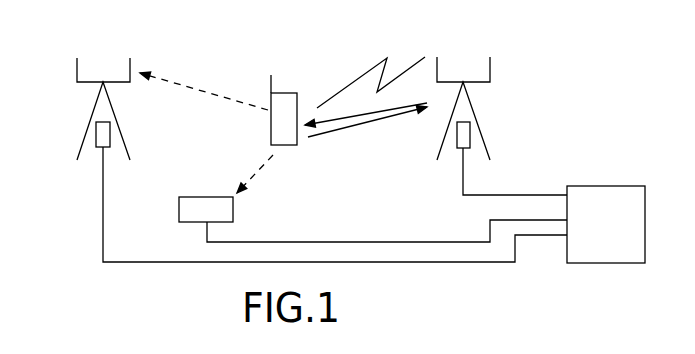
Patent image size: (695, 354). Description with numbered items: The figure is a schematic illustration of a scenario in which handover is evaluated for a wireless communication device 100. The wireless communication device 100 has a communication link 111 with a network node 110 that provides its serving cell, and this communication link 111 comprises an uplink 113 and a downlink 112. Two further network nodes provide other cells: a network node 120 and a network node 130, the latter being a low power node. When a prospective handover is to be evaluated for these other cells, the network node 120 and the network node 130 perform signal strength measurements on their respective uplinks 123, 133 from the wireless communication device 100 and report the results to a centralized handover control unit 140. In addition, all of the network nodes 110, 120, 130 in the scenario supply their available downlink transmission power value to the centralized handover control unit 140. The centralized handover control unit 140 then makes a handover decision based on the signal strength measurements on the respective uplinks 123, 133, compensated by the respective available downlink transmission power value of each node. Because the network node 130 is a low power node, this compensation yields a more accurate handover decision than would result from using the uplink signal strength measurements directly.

The wireless communication device 100 is at (297, 108).
The network node 110 is at (470, 130).
The communication link 111 is at (364, 100).
The downlink 112 is at (364, 105).
The uplink 113 is at (386, 113).
The network node 120 is at (96, 125).
The uplink 123 is at (200, 92).
The network node 130 is at (206, 209).
The uplink 133 is at (263, 167).
The centralized handover control unit 140 is at (606, 224).